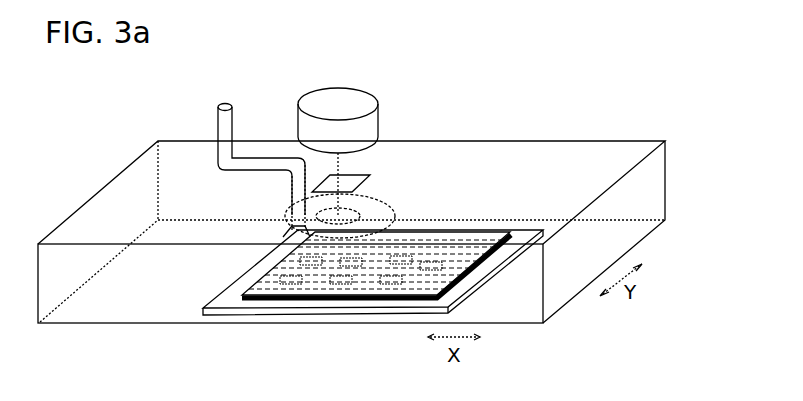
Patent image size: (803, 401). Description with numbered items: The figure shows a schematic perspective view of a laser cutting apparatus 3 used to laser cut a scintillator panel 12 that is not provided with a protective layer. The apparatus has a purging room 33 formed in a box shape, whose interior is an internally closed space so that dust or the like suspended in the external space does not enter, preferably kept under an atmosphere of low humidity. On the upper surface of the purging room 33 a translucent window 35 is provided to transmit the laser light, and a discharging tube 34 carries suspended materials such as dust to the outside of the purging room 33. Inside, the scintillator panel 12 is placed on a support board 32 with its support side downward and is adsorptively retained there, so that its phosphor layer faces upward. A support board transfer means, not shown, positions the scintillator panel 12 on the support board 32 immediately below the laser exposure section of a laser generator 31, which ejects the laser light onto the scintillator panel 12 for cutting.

The laser cutting apparatus 3 is at (476, 70).
The scintillator panel 12 is at (264, 302).
The laser generator 31 is at (378, 124).
The support board 32 is at (317, 316).
The purging room 33 is at (138, 160).
The discharging tube 34 is at (235, 110).
The translucent window 35 is at (354, 176).